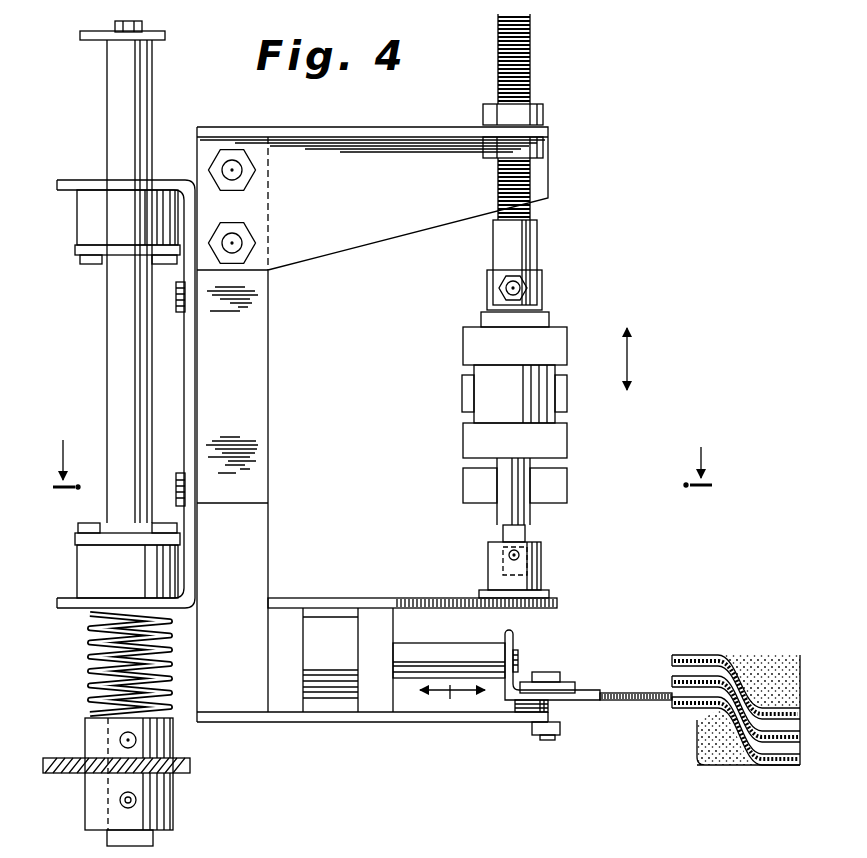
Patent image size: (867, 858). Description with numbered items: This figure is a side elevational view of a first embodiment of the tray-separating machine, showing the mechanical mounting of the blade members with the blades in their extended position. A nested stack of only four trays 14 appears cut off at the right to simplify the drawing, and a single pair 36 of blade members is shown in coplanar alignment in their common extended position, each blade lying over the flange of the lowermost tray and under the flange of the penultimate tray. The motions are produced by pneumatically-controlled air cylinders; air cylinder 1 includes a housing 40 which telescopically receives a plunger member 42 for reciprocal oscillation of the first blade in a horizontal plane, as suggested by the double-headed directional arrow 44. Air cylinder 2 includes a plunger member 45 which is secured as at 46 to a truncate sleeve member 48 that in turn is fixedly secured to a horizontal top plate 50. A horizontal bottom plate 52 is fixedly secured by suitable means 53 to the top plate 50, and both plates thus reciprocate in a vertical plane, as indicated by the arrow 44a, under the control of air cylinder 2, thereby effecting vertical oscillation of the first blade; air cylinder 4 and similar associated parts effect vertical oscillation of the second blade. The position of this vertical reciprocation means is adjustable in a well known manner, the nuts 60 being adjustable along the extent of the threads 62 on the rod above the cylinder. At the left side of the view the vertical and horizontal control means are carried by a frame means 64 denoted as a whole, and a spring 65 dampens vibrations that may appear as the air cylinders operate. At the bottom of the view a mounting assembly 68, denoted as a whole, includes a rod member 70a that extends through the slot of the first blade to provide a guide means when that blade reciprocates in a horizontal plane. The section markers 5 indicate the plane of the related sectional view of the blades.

The air cylinder 1 is at (370, 703).
The air cylinder 2 is at (563, 332).
The air cylinder 4 is at (468, 392).
The section line 5- 5 is at (382, 477).
The trays 14 is at (706, 655).
The pair of blade members 36 is at (647, 706).
The housing 40 is at (332, 618).
The plunger member 42 is at (430, 649).
The double-headed directional arrow 44 is at (450, 699).
The arrow 44a is at (630, 358).
The plunger member 45 is at (523, 512).
The securing point 46 is at (520, 555).
The truncate sleeve member 48 is at (488, 571).
The horizontal top plate 50 is at (421, 598).
The horizontal bottom plate 52 is at (408, 722).
The securing means 53 is at (230, 693).
The nuts 60 is at (548, 138).
The threads 62 is at (530, 62).
The frame means 64 is at (202, 362).
The spring 65 is at (87, 669).
The mounting assembly 68 is at (573, 731).
The rod member 70a is at (547, 740).